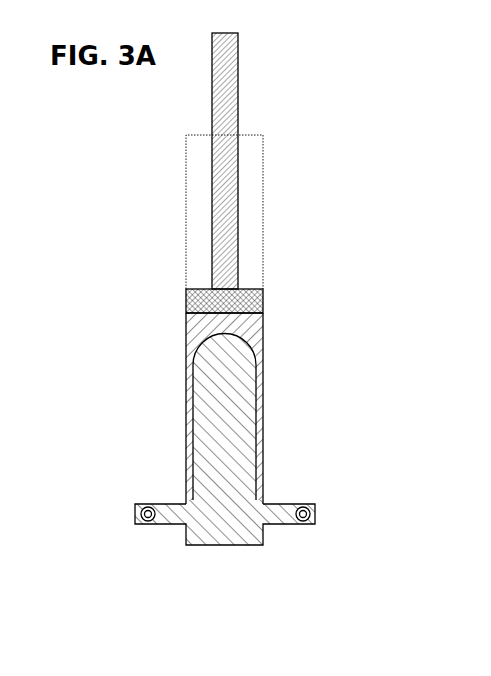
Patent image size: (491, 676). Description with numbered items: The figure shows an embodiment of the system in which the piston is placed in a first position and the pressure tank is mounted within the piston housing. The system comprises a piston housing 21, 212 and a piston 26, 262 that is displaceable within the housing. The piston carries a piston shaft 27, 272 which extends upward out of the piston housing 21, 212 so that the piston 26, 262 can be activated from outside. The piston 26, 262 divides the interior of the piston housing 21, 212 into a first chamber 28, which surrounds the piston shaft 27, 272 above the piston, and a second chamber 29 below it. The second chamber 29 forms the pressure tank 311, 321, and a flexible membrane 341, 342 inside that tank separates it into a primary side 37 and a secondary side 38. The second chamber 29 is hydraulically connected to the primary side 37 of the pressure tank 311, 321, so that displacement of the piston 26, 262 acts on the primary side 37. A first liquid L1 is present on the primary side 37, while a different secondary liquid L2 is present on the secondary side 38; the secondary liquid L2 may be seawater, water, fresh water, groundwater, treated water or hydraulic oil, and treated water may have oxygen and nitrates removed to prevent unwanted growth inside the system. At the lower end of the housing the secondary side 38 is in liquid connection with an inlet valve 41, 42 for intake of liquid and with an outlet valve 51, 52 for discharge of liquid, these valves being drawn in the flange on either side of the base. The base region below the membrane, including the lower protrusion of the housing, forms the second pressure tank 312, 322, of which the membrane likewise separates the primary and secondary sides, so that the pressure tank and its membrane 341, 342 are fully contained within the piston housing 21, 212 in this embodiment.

The piston shaft 27 is at (293, 151).
The second piston shaft 272 is at (247, 46).
The piston housing 21 is at (270, 322).
The second piston housing 212 is at (272, 132).
The first chamber 28 is at (192, 265).
The second chamber 29 is at (269, 401).
The piston 26 is at (306, 285).
The second piston 262 is at (264, 303).
The first pressure tank (diaphragm) 311 is at (269, 401).
The first pressure tank (bladder) 321 is at (192, 327).
The primary side 37 is at (128, 432).
The first liquid L1 is at (187, 420).
The secondary side 38 is at (169, 417).
The second liquid L2 is at (206, 433).
The flexible membrane (diaphragm) 341 is at (339, 432).
The flexible membrane (bladder) 342 is at (258, 415).
The inlet valve 41 is at (82, 532).
The inlet valve 42 is at (122, 518).
The outlet valve 51 is at (370, 528).
The outlet valve 52 is at (329, 517).
The second pressure tank (diaphragm) 312 is at (234, 551).
The second pressure tank (bladder) 322 is at (220, 532).